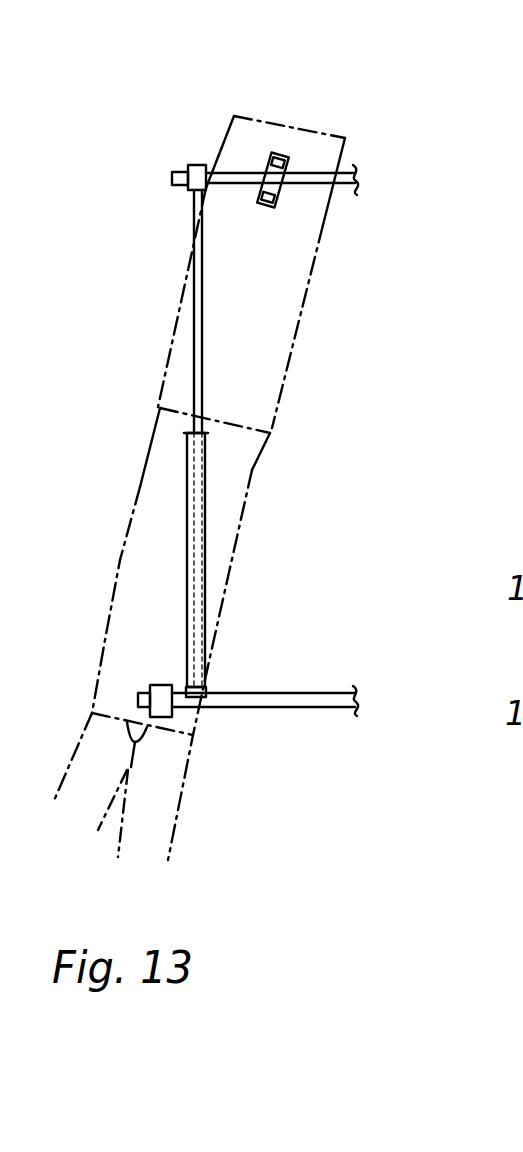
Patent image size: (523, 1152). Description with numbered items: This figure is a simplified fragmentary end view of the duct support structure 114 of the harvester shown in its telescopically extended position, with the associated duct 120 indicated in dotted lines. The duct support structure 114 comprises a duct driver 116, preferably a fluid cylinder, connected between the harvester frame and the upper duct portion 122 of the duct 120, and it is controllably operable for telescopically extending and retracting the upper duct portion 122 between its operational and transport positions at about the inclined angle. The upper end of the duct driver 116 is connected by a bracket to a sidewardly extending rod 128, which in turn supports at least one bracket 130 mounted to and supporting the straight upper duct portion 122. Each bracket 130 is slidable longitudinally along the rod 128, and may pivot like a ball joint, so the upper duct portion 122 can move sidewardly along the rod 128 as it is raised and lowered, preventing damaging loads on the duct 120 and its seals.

The duct support structure 114 is at (210, 592).
The duct driver 116 is at (207, 487).
The duct 120 is at (148, 450).
The upper duct portion 122 is at (222, 140).
The rod 128 is at (195, 165).
The bracket 130 is at (279, 157).